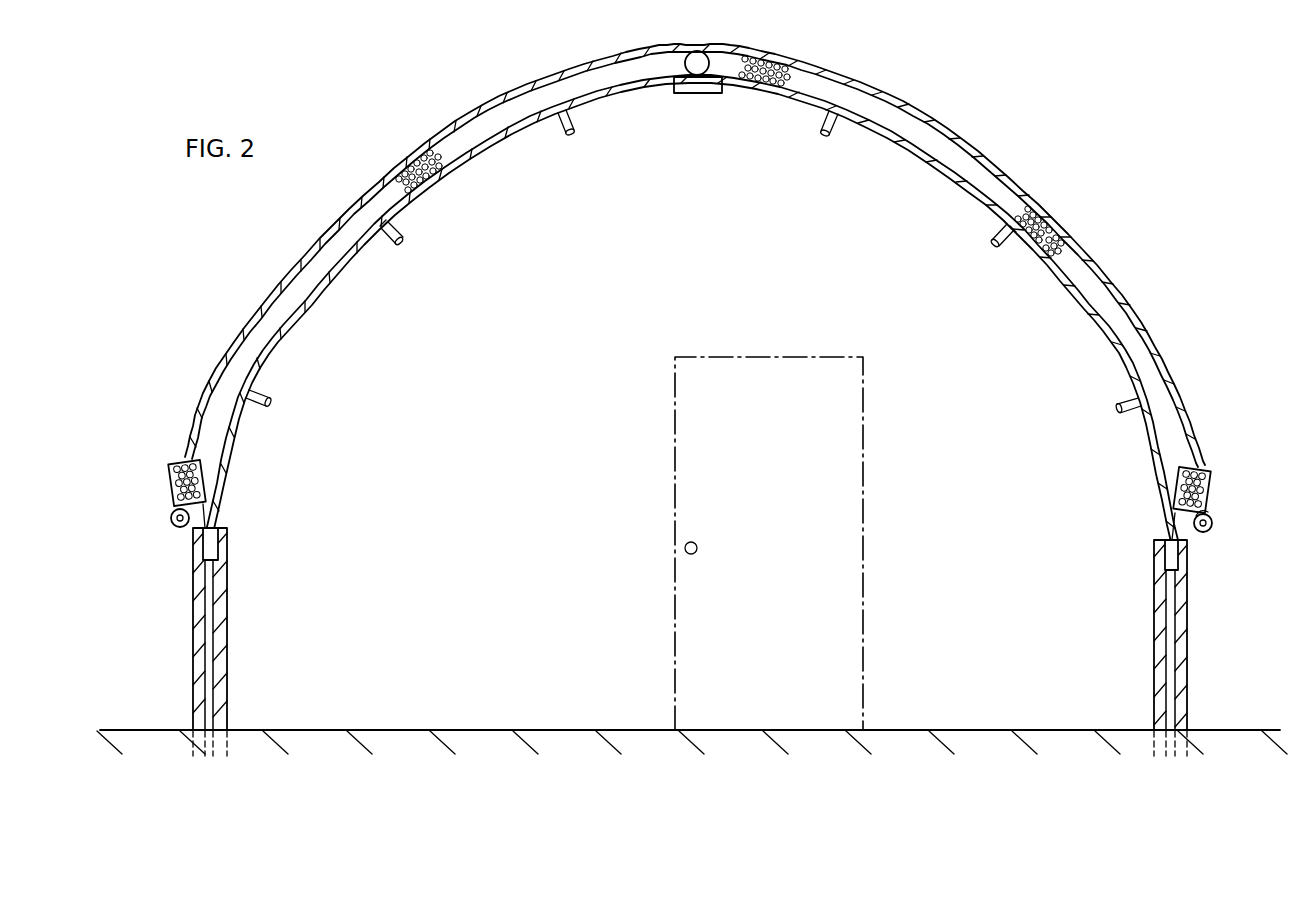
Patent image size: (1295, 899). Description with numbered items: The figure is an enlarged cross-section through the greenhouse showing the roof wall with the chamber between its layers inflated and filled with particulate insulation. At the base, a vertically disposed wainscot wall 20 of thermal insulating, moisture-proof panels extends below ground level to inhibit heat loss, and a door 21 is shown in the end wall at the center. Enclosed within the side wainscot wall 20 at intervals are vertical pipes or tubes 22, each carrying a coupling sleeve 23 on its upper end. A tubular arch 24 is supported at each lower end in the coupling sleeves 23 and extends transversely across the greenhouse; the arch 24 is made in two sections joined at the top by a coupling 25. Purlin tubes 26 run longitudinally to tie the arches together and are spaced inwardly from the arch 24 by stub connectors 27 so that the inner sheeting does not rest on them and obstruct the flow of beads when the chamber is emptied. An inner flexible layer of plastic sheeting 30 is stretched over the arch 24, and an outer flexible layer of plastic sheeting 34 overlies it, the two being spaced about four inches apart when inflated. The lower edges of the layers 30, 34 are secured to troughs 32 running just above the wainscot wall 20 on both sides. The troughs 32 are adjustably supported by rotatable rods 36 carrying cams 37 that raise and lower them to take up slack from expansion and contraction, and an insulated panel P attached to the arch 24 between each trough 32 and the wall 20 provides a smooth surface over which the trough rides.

The wainscot wall 20 is at (197, 648).
The door 21 is at (863, 572).
The vertical pipe or tube 22 is at (209, 658).
The coupling sleeve 23 is at (210, 548).
The tubular arch 24 is at (932, 175).
The coupling 25 is at (700, 95).
The purlin tube 26 is at (572, 145).
The stub connector 27 is at (390, 244).
The inner flexible layer of plastic sheeting 30 is at (880, 128).
The trough 32 is at (172, 478).
The outer flexible layer of plastic sheeting 34 is at (1125, 312).
The rotatable rod 36 is at (1213, 530).
The cam 37 is at (173, 512).
The insulated panel P is at (202, 530).